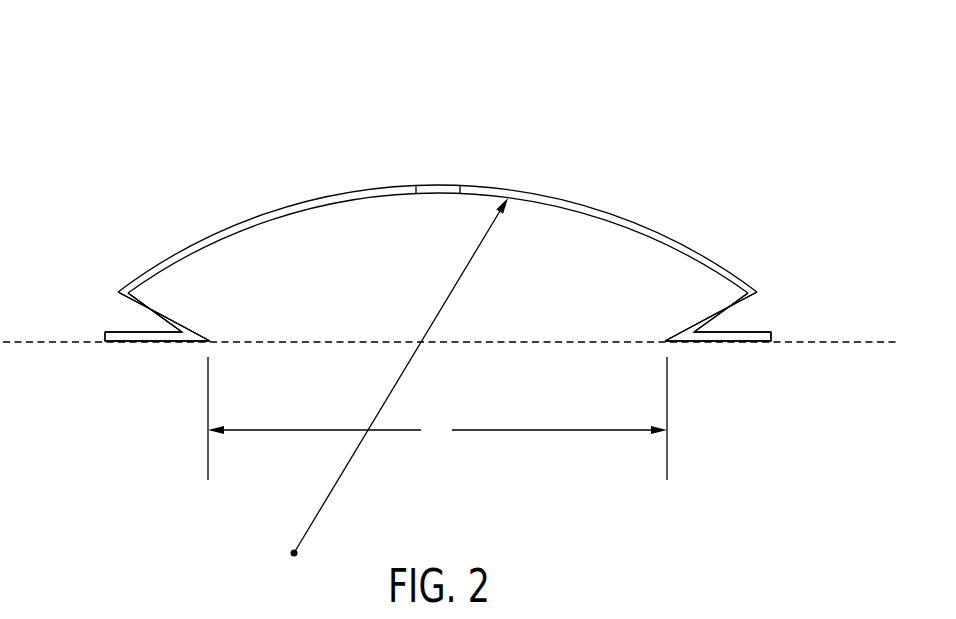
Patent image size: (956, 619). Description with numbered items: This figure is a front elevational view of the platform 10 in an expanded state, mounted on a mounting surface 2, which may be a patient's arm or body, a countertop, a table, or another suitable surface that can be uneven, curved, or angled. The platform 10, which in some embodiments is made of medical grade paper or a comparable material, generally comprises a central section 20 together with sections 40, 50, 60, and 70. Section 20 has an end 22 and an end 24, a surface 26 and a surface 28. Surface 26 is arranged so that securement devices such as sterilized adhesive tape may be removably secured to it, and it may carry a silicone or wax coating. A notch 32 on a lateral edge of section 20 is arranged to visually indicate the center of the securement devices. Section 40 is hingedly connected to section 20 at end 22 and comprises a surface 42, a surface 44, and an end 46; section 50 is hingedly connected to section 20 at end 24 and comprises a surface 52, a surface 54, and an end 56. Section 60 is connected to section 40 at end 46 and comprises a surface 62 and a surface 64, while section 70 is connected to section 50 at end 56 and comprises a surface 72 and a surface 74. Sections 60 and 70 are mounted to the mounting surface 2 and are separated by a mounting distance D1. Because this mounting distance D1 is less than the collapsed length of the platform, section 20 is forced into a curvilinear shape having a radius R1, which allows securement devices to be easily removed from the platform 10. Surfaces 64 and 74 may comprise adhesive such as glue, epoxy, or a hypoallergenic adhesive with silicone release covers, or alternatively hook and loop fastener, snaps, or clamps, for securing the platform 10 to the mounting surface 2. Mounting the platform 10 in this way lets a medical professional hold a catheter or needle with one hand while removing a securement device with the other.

The platform 10 is at (596, 70).
The section 20 is at (498, 190).
The surface 26 is at (368, 187).
The surface 28 is at (287, 212).
The notch 32 is at (437, 192).
The end 22 is at (120, 292).
The end 24 is at (757, 292).
The section 40 is at (172, 320).
The surface 42 is at (142, 295).
The surface 44 is at (157, 320).
The end 46 is at (208, 342).
The section 60 is at (163, 342).
The surface 62 is at (115, 332).
The surface 64 is at (113, 342).
The section 50 is at (705, 320).
The surface 52 is at (732, 295).
The surface 54 is at (717, 320).
The end 56 is at (667, 342).
The section 70 is at (712, 338).
The surface 72 is at (763, 332).
The surface 74 is at (763, 342).
The mounting surface 2 is at (868, 345).
The radius R1 is at (400, 377).
The distance D1 is at (437, 418).